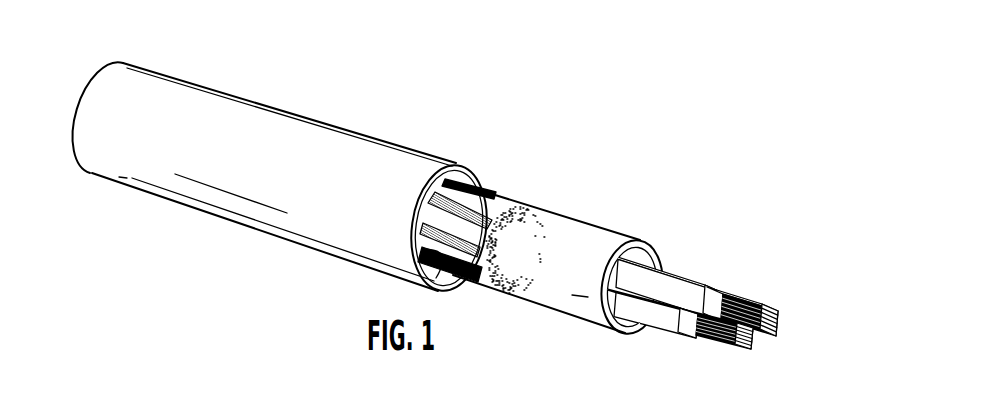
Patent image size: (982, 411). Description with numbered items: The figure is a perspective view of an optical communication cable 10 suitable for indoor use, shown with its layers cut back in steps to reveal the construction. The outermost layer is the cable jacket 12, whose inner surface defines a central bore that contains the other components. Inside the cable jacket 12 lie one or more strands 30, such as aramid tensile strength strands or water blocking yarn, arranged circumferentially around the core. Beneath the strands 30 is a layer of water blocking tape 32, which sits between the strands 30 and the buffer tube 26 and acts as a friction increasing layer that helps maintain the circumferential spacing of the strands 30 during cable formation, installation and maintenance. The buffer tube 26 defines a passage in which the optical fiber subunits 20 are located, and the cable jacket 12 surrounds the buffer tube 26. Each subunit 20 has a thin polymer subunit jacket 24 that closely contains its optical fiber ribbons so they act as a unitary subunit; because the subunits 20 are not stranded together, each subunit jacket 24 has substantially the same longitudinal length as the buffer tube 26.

The cable 10 is at (597, 105).
The cable jacket 12 is at (262, 130).
The optical fiber subunits 20 is at (743, 275).
The subunit jacket 24 is at (680, 290).
The buffer tube 26 is at (592, 242).
The strands 30 is at (487, 187).
The water blocking tape 32 is at (517, 218).